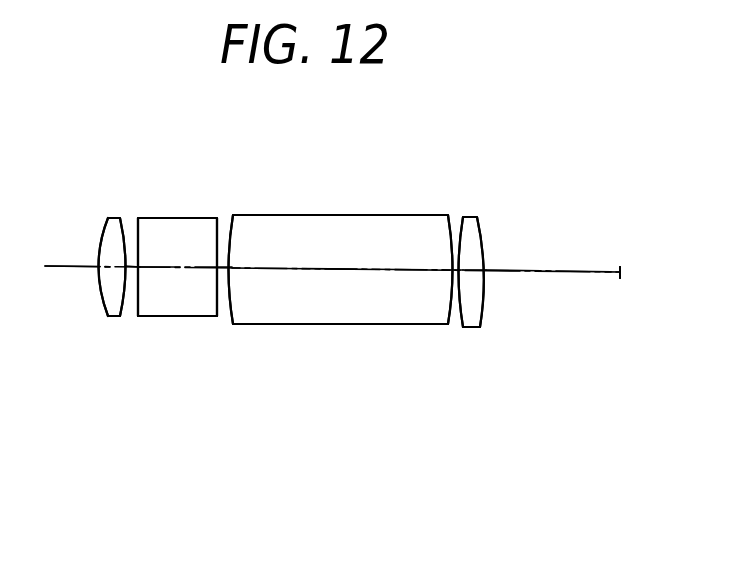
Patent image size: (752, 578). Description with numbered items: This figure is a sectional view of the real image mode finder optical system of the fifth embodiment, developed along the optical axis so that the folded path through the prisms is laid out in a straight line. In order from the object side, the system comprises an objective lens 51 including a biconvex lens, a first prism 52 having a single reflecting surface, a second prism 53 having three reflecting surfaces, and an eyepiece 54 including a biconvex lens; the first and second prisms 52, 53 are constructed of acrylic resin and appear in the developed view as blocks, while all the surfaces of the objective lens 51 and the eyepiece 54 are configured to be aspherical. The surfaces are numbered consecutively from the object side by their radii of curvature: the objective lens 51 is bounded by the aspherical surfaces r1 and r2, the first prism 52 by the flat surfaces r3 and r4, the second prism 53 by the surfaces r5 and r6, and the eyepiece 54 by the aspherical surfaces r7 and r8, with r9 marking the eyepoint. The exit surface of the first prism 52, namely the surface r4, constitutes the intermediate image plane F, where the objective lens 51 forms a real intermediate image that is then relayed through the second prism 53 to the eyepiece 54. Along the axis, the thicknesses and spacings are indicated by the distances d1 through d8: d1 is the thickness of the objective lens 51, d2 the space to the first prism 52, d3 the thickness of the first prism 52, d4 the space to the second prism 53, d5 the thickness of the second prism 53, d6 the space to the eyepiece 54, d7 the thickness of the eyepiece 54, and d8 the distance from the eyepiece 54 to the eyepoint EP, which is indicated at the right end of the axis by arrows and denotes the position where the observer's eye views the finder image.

The objective lens 51 is at (112, 218).
The first prism 52 is at (176, 226).
The second prism 53 is at (337, 226).
The eyepiece 54 is at (471, 226).
The radius of curvature of first surface r1 is at (97, 238).
The radius of curvature of second surface r2 is at (127, 236).
The radius of curvature of third surface r3 is at (152, 220).
The radius of curvature of fourth surface r4 is at (217, 222).
The radius of curvature of fifth surface r5 is at (226, 226).
The radius of curvature of sixth surface r6 is at (452, 226).
The radius of curvature of seventh surface r7 is at (462, 230).
The radius of curvature of eighth surface r8 is at (484, 240).
The eyepoint surface r9 is at (620, 257).
The thickness of objective lens d1 is at (112, 270).
The space between objective lens and first prism d2 is at (131, 268).
The thickness of first prism d3 is at (178, 268).
The space between first prism and second prism d4 is at (222, 270).
The thickness of second prism d5 is at (344, 270).
The space between second prism and eyepiece d6 is at (458, 272).
The thickness of eyepiece d7 is at (471, 275).
The space between eyepiece and eyepoint d8 is at (551, 273).
The intermediate image plane F is at (217, 308).
The eyepoint EP is at (620, 292).